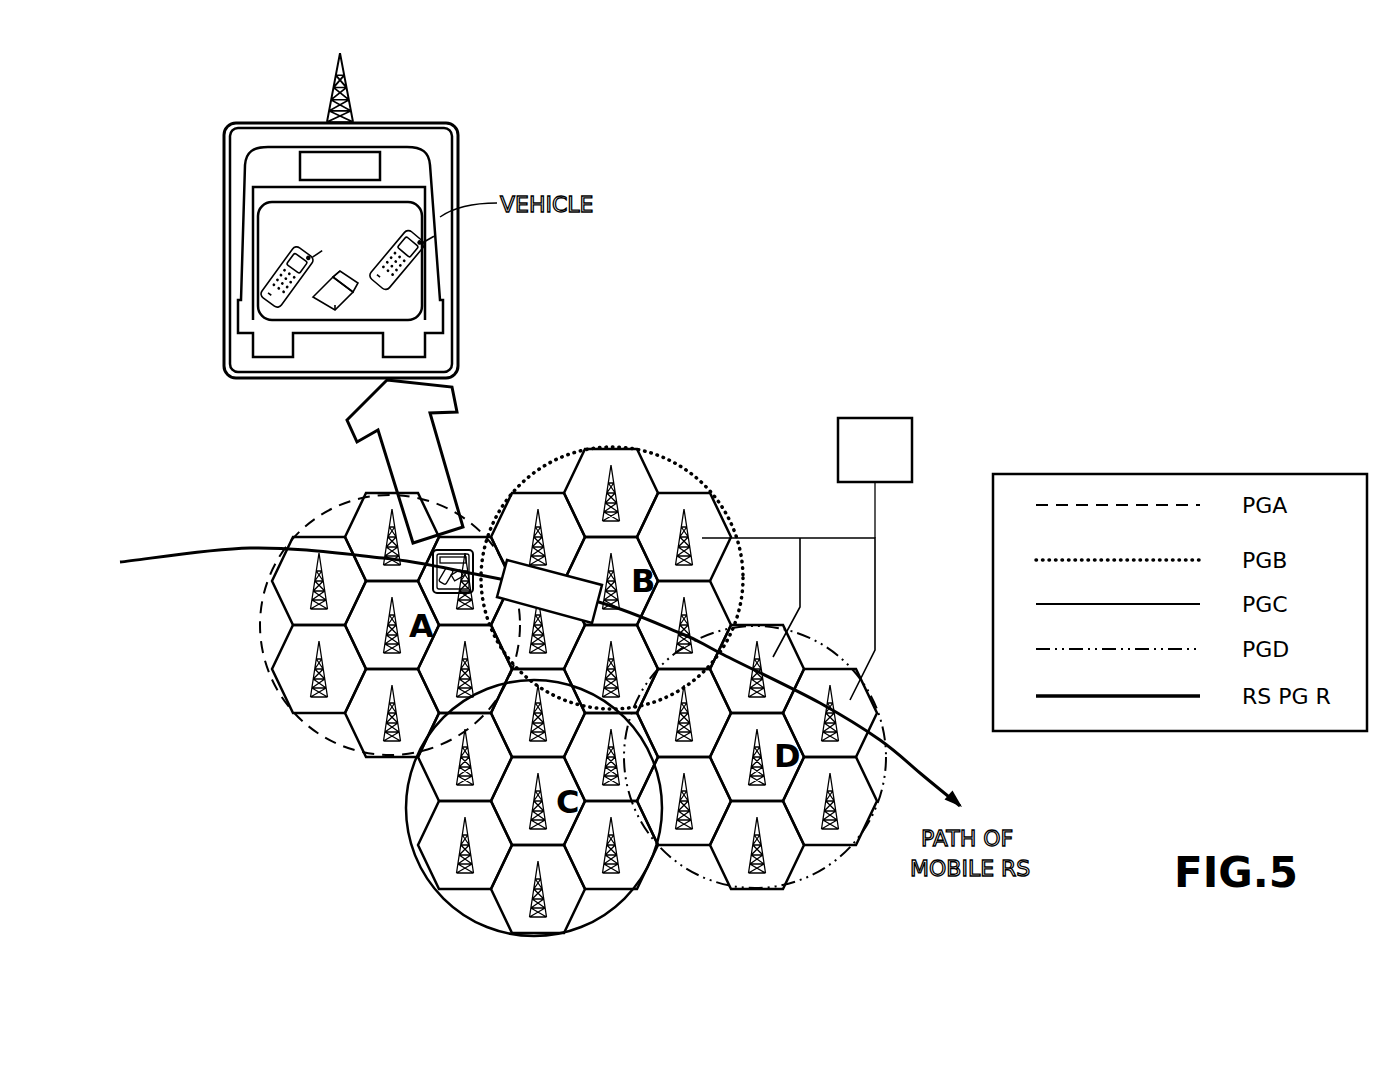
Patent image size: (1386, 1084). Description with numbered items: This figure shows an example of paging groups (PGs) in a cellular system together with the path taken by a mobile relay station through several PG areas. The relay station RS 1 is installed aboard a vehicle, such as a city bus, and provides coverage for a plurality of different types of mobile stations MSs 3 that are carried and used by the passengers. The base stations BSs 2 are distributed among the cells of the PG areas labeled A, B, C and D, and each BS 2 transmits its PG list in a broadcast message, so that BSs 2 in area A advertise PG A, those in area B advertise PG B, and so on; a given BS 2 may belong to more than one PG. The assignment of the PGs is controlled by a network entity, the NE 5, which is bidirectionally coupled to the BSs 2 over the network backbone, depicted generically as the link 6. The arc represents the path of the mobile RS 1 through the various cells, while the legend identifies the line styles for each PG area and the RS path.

The relay station (RS) 1 is at (380, 163).
The base station (BS) 2 is at (352, 98).
The mobile station (MS) 3 is at (278, 267).
The network element (NE) 5 is at (912, 432).
The link 6 is at (755, 538).